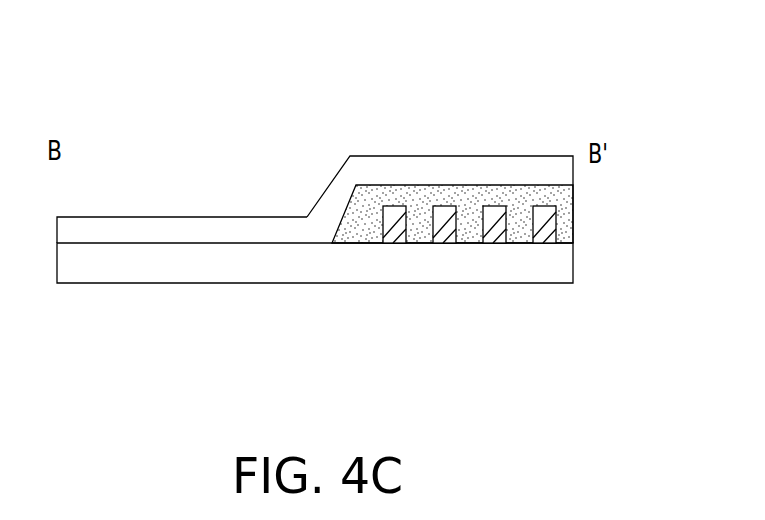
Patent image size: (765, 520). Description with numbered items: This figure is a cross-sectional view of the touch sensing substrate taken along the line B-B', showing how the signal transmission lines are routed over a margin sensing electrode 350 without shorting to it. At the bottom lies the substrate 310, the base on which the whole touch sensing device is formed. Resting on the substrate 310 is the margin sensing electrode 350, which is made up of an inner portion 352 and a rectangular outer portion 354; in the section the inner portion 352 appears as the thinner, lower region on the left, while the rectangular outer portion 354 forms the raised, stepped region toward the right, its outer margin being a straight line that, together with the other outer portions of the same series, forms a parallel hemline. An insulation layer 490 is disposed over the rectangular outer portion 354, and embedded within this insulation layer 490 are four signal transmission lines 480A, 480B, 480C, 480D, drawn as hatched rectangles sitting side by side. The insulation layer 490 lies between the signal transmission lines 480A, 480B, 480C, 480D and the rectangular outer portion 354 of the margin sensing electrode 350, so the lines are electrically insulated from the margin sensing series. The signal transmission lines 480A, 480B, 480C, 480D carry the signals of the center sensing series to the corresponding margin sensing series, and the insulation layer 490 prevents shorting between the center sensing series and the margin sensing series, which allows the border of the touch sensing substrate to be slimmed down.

The substrate 310 is at (556, 262).
The margin sensing electrode 350 is at (374, 73).
The inner portion 352 is at (170, 232).
The rectangular outer portion 354 is at (426, 168).
The insulation layer 490 is at (562, 192).
The signal transmission line 480A is at (548, 232).
The signal transmission line 480B is at (497, 232).
The signal transmission line 480C is at (443, 232).
The signal transmission line 480D is at (395, 232).